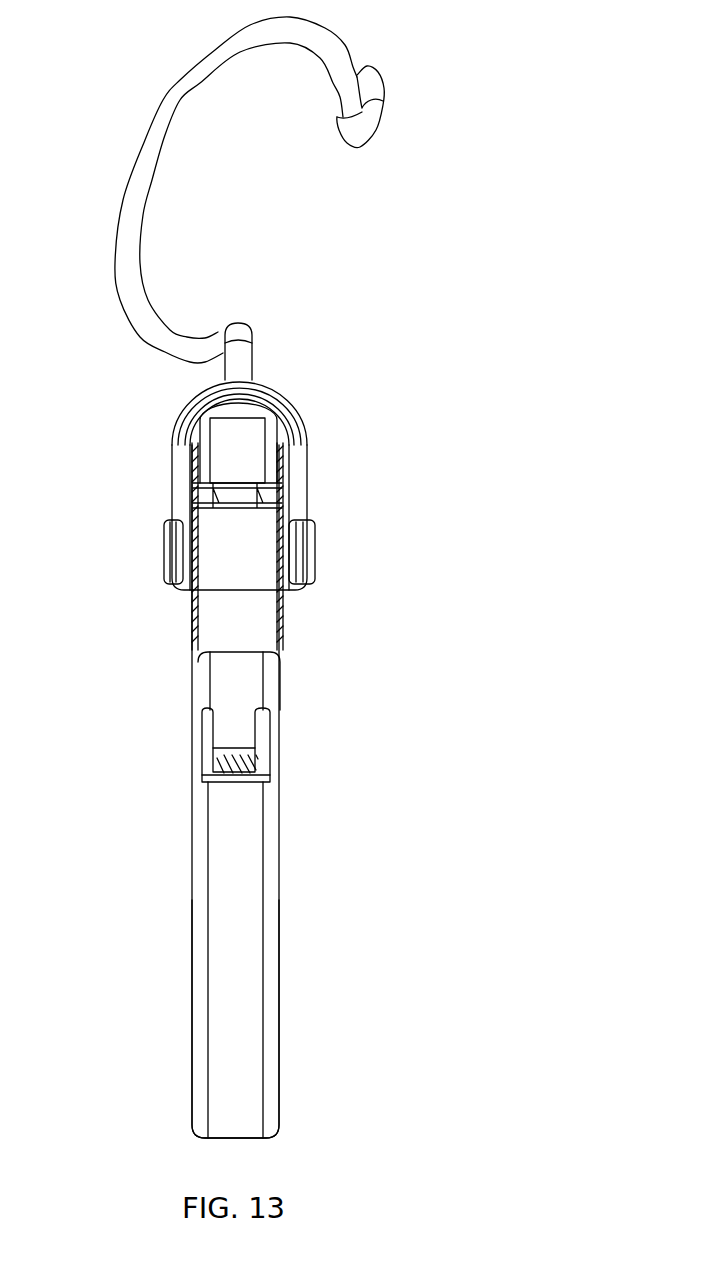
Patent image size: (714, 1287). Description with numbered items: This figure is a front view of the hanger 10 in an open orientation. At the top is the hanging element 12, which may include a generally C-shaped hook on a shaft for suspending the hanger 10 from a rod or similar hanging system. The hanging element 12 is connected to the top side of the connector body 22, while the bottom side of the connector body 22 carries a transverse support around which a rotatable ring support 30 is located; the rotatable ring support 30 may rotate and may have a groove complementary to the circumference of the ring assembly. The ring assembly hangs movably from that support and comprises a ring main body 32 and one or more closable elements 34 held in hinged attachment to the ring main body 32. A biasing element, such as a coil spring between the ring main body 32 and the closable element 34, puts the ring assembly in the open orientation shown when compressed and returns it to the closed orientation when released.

The hanger 10 is at (173, 895).
The hanging element 12 is at (110, 161).
The connector body 22 is at (317, 465).
The rotatable ring support 30 is at (253, 573).
The ring main body 32 is at (280, 1020).
The closable element 34 is at (192, 703).